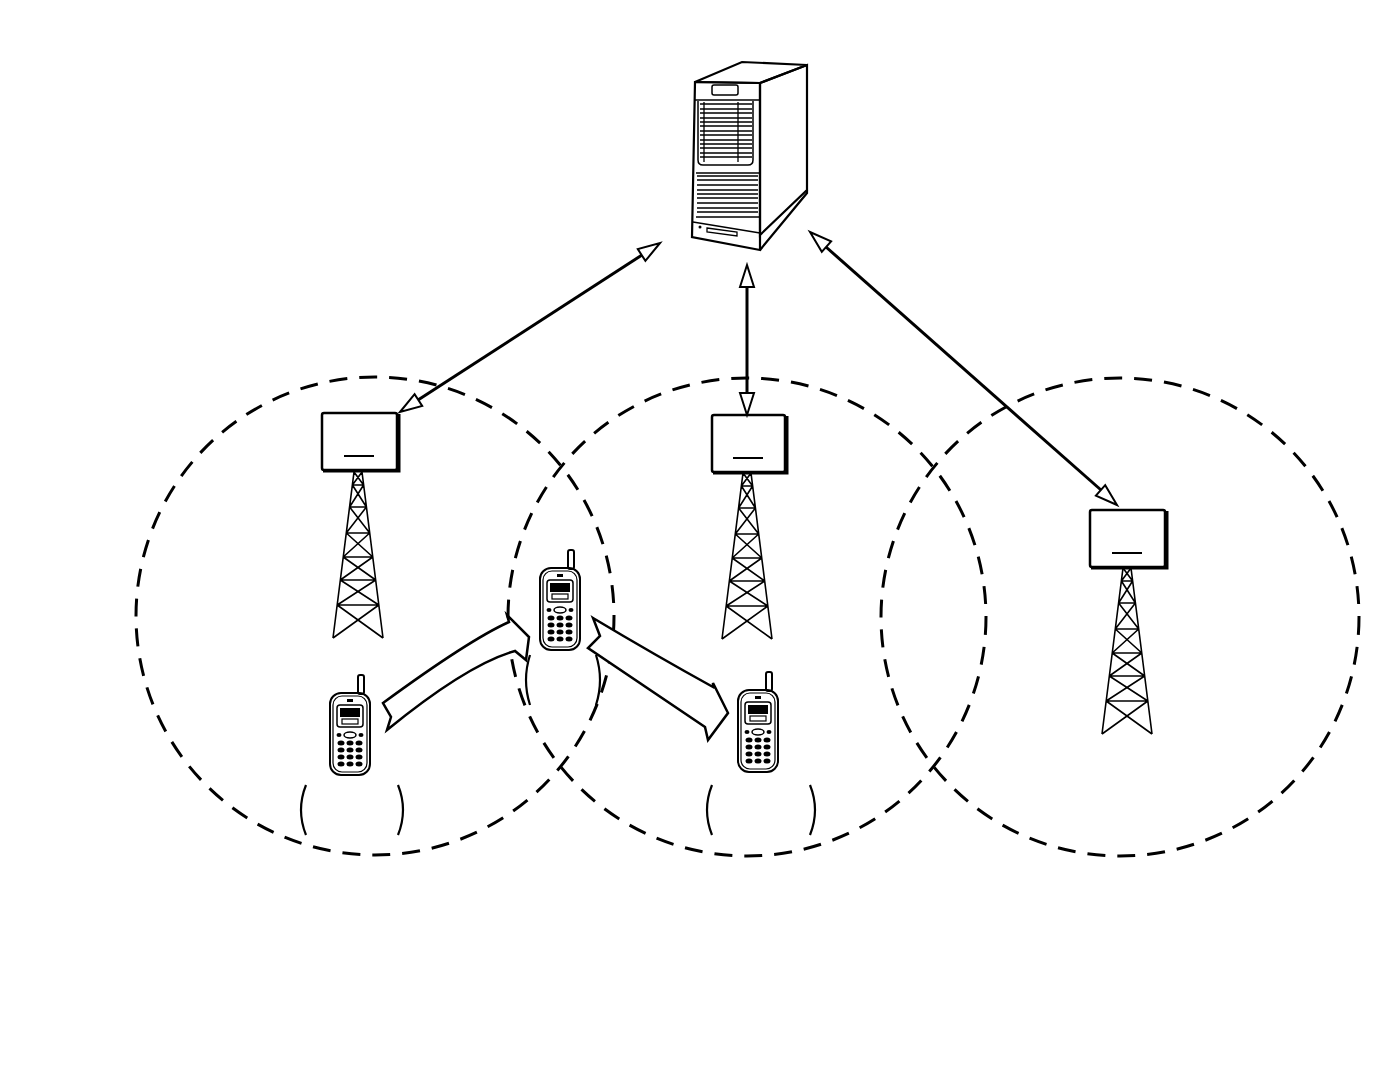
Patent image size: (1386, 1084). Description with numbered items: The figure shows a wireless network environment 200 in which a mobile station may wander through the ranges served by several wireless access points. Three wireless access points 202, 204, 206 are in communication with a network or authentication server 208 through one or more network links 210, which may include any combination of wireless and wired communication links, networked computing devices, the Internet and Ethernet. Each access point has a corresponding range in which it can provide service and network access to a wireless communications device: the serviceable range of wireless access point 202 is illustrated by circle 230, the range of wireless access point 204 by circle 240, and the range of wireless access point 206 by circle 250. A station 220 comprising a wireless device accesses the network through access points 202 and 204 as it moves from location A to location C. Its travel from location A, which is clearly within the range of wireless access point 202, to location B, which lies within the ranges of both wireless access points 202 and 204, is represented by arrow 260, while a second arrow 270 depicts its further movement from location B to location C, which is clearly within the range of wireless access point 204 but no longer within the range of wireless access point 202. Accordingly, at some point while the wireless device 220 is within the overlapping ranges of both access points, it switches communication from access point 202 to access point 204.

The wireless network environment 200 is at (468, 207).
The wireless access point 202 is at (360, 525).
The wireless access point 204 is at (749, 527).
The wireless access point 206 is at (1128, 622).
The network or authentication server 208 is at (797, 115).
The network link 210 is at (580, 298).
The station 220 is at (330, 735).
The circle 230 is at (508, 423).
The circle 240 is at (862, 407).
The circle 250 is at (1233, 408).
The arrow 260 is at (437, 713).
The movement from location B to location C 270 is at (672, 715).